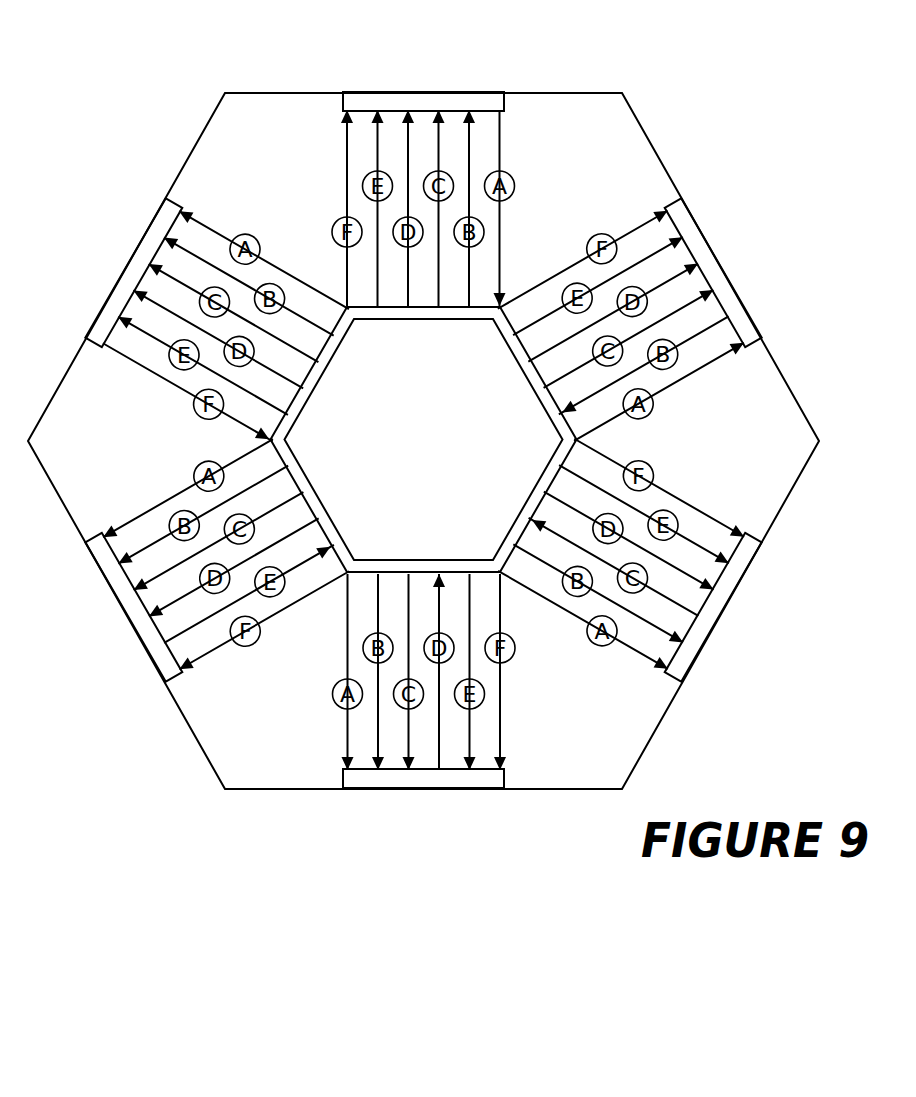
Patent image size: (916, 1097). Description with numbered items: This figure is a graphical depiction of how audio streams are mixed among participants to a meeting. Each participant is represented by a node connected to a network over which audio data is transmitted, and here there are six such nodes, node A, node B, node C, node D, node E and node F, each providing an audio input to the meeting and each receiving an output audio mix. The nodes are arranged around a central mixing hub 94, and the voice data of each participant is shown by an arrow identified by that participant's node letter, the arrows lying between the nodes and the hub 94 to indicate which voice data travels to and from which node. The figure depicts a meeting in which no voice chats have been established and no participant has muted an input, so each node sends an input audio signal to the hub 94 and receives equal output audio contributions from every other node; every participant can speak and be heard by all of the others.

The central mixing hub 94 is at (410, 451).
The node A is at (424, 92).
The node B is at (718, 262).
The node C is at (722, 612).
The node D is at (426, 788).
The node E is at (126, 613).
The node F is at (126, 266).